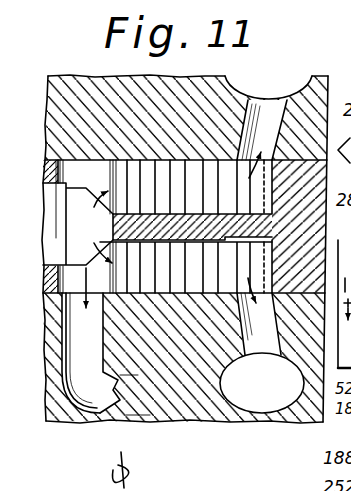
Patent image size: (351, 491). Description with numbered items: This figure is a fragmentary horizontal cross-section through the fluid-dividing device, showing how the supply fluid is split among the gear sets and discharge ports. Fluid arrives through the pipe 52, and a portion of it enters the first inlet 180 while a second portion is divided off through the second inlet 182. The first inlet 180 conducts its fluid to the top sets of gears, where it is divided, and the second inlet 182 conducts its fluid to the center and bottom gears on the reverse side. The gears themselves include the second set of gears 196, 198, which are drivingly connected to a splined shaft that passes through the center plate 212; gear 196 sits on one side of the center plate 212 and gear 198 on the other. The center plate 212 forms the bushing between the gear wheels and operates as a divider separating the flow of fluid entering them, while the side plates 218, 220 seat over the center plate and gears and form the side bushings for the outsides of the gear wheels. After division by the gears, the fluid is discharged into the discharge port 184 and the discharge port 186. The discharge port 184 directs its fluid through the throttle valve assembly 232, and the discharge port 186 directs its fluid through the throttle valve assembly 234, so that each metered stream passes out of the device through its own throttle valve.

The pipe 52 is at (60, 192).
The first inlet 180 is at (78, 245).
The second inlet 182 is at (91, 353).
The discharge port 184 is at (259, 316).
The discharge port 186 is at (262, 139).
The gear 196 is at (177, 282).
The gear 198 is at (176, 168).
The center plate 212 is at (313, 224).
The side plate 218 is at (324, 77).
The side plate 220 is at (300, 423).
The throttle valve assembly 232 is at (262, 383).
The throttle valve assembly 234 is at (268, 87).